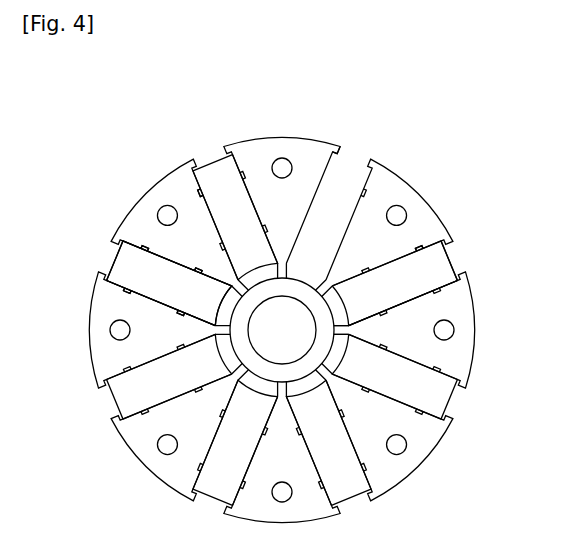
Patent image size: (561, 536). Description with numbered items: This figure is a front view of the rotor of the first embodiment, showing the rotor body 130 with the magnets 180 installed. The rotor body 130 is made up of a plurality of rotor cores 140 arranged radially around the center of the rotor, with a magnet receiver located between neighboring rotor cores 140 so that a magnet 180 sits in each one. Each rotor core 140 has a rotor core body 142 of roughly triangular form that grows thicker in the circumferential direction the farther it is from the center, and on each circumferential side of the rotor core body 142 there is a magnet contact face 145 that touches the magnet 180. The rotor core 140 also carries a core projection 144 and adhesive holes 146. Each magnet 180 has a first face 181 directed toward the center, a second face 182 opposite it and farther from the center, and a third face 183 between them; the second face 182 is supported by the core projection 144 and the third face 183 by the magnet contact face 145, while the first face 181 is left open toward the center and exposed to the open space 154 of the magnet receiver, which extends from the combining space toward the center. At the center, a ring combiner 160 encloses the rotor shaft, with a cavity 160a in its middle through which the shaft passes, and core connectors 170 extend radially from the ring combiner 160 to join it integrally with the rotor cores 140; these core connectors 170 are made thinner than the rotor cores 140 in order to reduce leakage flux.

The rotor body 130 is at (173, 67).
The rotor core 140 is at (256, 133).
The rotor core body 142 is at (283, 145).
The core projection 144 is at (371, 166).
The magnet contact face 145 is at (193, 194).
The adhesive hole 146 is at (365, 182).
The open space 154 is at (338, 352).
The ring combiner 160 is at (262, 293).
The cavity 160a is at (269, 345).
The core connector 170 is at (228, 292).
The magnet 180 is at (403, 281).
The first face 181 is at (350, 331).
The second face 182 is at (455, 258).
The third face 183 is at (405, 308).